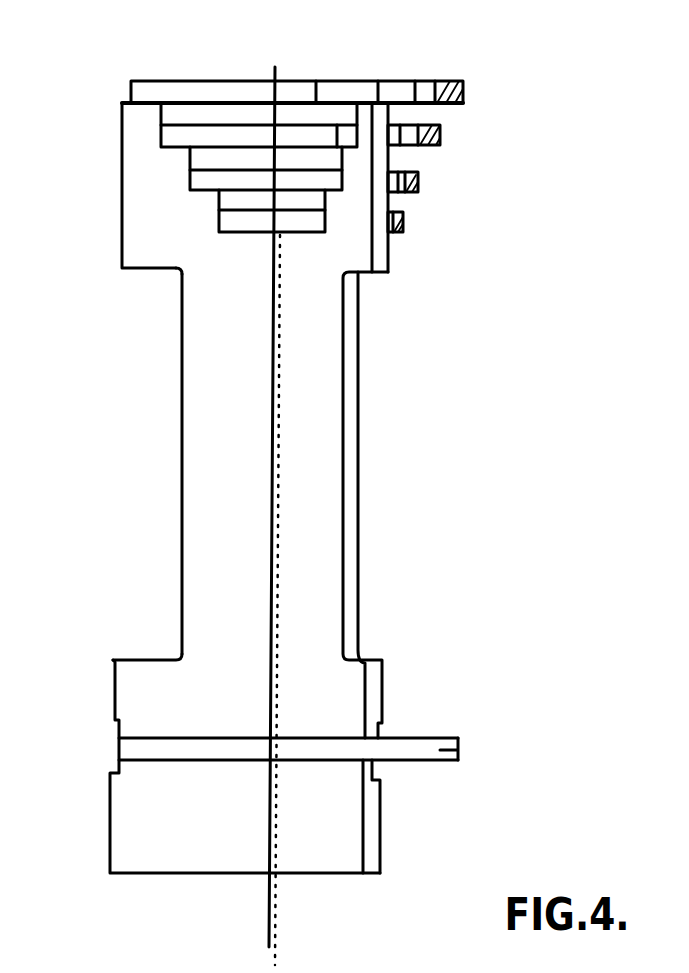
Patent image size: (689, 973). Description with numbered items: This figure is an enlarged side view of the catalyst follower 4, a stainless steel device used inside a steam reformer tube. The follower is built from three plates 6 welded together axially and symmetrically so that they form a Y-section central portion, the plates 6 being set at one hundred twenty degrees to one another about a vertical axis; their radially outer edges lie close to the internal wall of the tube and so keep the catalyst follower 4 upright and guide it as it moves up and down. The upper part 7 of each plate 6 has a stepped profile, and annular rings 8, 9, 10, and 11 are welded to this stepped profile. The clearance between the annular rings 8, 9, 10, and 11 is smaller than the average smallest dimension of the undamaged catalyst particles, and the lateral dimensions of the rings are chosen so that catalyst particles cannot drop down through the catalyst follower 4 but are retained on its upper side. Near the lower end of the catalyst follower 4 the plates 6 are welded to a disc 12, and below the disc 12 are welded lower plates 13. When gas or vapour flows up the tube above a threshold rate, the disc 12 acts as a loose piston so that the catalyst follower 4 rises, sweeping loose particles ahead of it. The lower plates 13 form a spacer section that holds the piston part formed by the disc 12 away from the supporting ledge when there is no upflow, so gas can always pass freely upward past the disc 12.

The catalyst follower 4 is at (308, 475).
The plates 6 is at (380, 252).
The upper part 7 is at (167, 230).
The annular ring 8 is at (440, 85).
The annular ring 9 is at (438, 125).
The annular ring 10 is at (418, 170).
The annular ring 11 is at (402, 215).
The disc 12 is at (460, 748).
The lower plates 13 is at (110, 815).